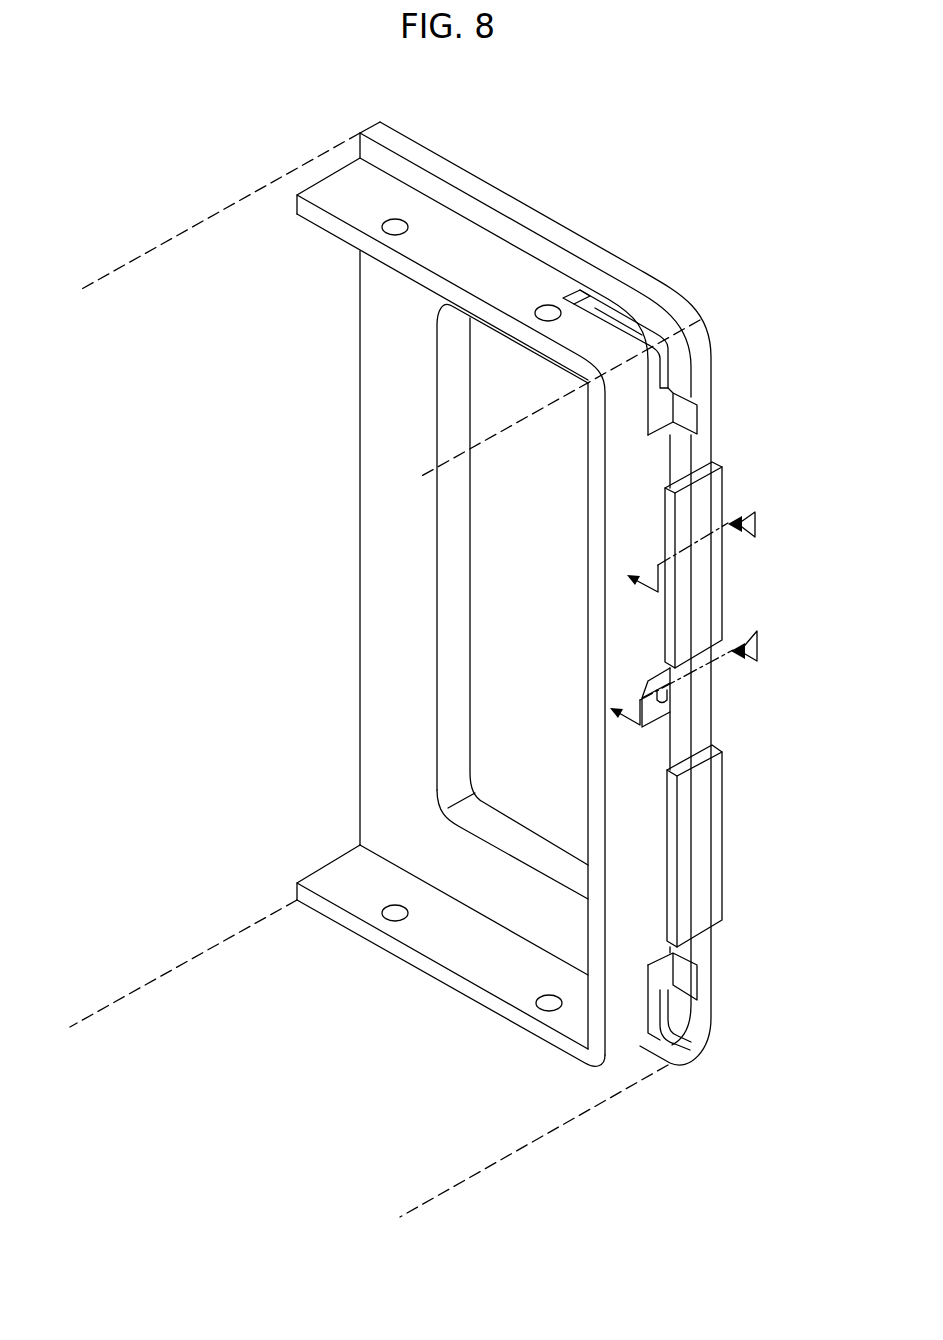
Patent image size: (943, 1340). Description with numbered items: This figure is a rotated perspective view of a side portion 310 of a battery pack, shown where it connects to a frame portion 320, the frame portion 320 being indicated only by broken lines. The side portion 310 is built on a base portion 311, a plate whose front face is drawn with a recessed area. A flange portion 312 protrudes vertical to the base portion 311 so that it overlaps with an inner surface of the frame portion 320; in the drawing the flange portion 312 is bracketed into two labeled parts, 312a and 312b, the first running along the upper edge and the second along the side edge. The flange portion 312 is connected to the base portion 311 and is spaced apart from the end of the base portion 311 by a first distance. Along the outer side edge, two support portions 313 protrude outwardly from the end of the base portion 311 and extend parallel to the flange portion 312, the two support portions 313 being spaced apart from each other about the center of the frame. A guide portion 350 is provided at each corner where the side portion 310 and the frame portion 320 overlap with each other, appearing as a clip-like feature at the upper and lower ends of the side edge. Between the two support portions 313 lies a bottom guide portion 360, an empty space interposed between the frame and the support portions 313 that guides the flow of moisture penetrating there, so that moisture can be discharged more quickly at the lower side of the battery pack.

The side portion 310 is at (622, 226).
The base portion 311 is at (385, 755).
The flange portion 312 is at (441, 593).
The upper recess portion 312a is at (522, 288).
The side recess portion 312b is at (635, 518).
The support portion 313 is at (707, 585).
The frame portion 320 is at (229, 193).
The guide portion 350 is at (650, 322).
The bottom guide portion 360 is at (660, 695).